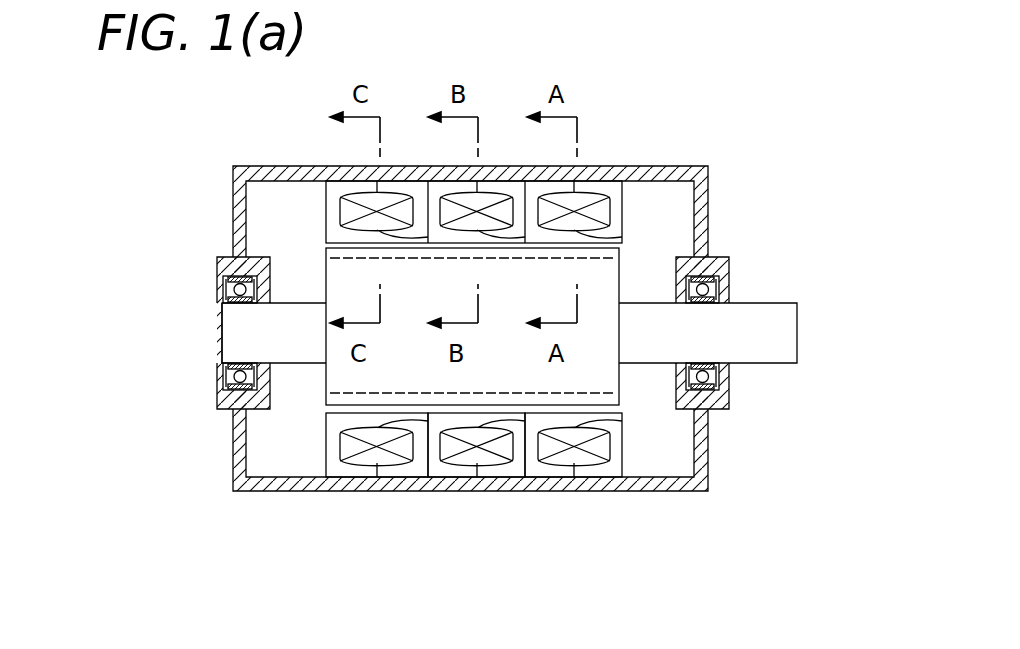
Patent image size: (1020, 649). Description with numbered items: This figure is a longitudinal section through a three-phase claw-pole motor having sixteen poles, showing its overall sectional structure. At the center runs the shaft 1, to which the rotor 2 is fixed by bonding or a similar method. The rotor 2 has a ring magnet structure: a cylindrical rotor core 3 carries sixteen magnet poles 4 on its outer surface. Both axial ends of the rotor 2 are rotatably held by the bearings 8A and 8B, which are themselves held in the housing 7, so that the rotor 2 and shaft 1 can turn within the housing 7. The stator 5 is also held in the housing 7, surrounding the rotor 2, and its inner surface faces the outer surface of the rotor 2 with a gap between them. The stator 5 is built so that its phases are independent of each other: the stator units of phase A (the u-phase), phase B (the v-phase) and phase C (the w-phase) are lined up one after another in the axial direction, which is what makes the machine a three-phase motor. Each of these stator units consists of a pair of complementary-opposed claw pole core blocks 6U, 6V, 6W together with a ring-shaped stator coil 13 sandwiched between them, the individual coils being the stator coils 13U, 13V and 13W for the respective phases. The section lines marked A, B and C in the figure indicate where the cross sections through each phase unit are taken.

The shaft 1 is at (238, 348).
The rotor 2 is at (509, 421).
The rotor core 3 is at (620, 378).
The magnet poles 4 is at (617, 380).
The stator 5 is at (423, 339).
The claw pole core block 6U is at (540, 477).
The claw pole core block 6V is at (450, 477).
The claw pole core block 6W is at (369, 477).
The housing 7 is at (245, 491).
The bearing 8A is at (706, 378).
The bearing 8B is at (233, 290).
The stator coil 13 is at (347, 213).
The stator coil 13U is at (580, 523).
The stator coil 13V is at (421, 212).
The stator coil 13W is at (342, 448).